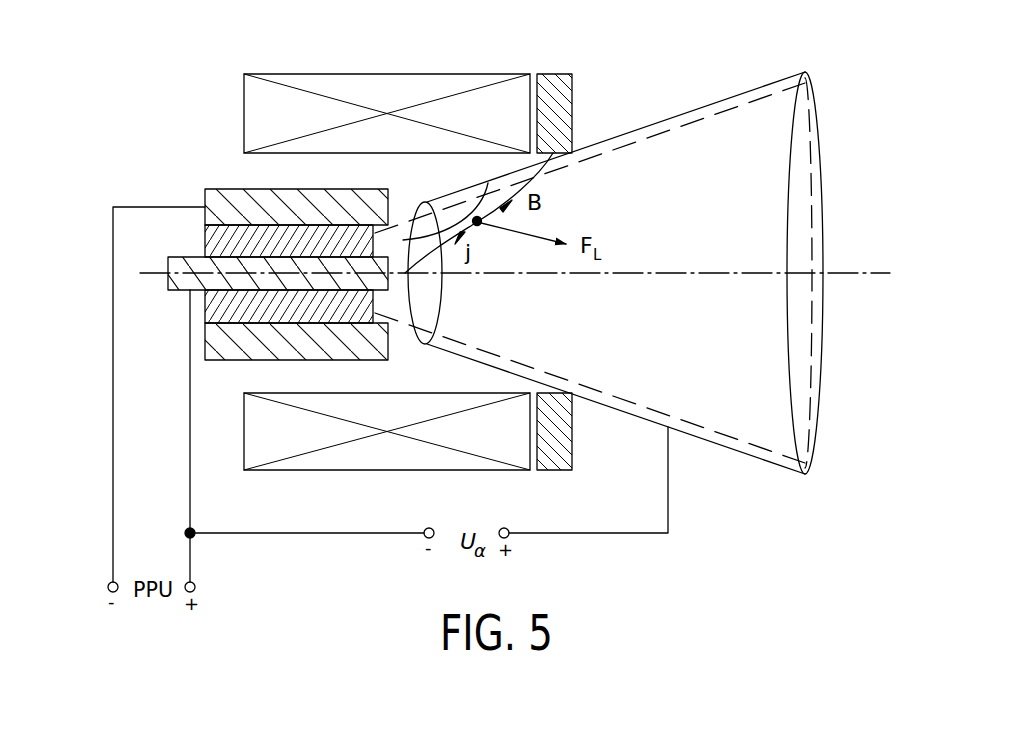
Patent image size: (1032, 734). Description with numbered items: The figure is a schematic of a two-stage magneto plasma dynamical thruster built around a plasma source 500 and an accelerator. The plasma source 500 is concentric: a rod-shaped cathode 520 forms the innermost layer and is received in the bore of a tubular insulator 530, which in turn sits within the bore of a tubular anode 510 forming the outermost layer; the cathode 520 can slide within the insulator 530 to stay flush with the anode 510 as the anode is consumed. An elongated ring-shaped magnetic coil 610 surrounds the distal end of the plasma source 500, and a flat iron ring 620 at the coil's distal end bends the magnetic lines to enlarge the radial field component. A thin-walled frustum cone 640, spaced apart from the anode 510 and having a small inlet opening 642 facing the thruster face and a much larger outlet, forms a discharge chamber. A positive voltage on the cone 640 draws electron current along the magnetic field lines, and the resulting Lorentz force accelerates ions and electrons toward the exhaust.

The plasma source 500 is at (112, 62).
The anode 510 is at (235, 189).
The cathode 520 is at (178, 291).
The insulator 530 is at (205, 237).
The magnetic coil 610 is at (358, 73).
The iron ring 620 is at (558, 73).
The cone 640 is at (683, 113).
The anode entrance aperture 642 is at (415, 330).